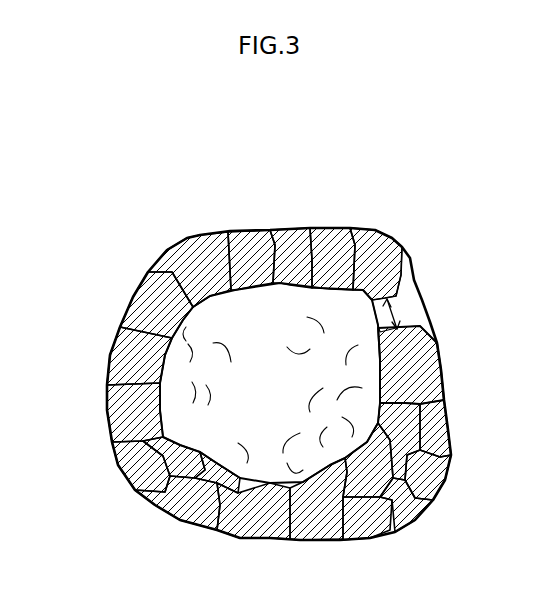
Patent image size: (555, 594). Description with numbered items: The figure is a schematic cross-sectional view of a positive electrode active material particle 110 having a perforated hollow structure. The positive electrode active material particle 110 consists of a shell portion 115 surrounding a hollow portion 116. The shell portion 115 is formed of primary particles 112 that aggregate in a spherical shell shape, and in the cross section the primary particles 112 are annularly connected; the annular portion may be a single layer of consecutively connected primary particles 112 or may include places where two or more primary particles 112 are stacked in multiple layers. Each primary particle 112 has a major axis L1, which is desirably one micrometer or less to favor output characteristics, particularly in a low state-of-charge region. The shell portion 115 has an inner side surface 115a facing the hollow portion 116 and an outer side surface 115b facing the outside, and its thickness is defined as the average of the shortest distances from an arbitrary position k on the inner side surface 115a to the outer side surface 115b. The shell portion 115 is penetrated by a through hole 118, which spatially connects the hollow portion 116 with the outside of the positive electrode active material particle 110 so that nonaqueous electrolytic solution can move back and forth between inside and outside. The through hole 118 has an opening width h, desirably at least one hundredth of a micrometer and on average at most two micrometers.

The positive electrode active material particle 110 is at (444, 183).
The primary particle 112 is at (420, 375).
The shell portion 115 is at (189, 232).
The inner side surface 115a is at (163, 348).
The outer side surface 115b is at (148, 273).
The hollow portion 116 is at (292, 406).
The through hole 118 is at (421, 283).
The opening width h is at (405, 312).
The arbitrary position k is at (288, 291).
The major axis L1 is at (208, 530).